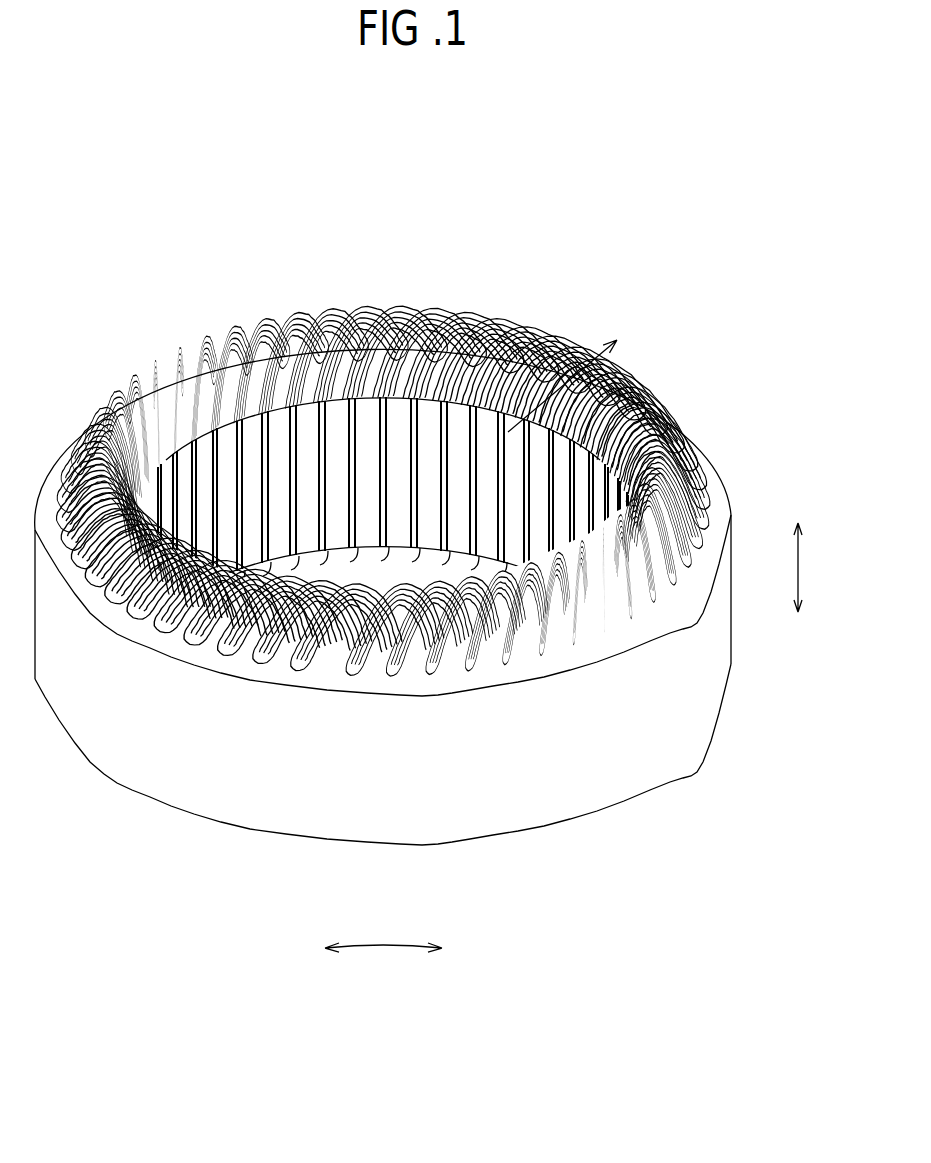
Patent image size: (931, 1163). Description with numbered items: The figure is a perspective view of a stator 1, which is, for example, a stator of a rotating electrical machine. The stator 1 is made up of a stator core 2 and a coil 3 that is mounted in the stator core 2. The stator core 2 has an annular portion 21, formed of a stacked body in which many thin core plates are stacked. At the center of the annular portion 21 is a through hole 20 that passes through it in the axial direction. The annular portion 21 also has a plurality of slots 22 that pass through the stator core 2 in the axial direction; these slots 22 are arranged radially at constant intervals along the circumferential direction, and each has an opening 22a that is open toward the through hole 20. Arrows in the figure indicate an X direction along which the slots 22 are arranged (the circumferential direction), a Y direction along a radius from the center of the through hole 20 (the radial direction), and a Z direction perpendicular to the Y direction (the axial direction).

The stator 1 is at (432, 535).
The stator core 2 is at (383, 615).
The coil 3 is at (383, 573).
The through hole 20 is at (397, 591).
The annular portion 21 is at (203, 802).
The slots 22 is at (390, 672).
The openings 22a is at (390, 430).